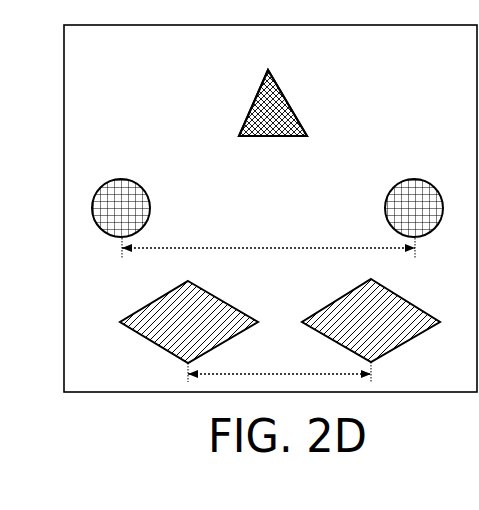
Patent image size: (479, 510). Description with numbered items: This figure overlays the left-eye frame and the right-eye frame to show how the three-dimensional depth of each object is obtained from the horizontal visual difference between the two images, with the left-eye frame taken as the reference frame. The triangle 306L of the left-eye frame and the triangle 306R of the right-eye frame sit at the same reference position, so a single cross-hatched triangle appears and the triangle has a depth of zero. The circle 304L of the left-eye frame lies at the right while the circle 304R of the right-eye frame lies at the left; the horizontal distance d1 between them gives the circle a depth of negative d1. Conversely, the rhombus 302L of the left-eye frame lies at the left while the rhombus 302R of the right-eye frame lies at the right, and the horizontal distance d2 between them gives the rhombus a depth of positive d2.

The rhombus 302L is at (218, 295).
The rhombus 302R is at (385, 305).
The circle 304L is at (395, 180).
The circle 304R is at (142, 182).
The triangle 306L is at (288, 97).
The triangle 306R is at (273, 103).
The horizontal distance of the circle d1 is at (268, 239).
The horizontal distance of the rhombus d2 is at (279, 362).